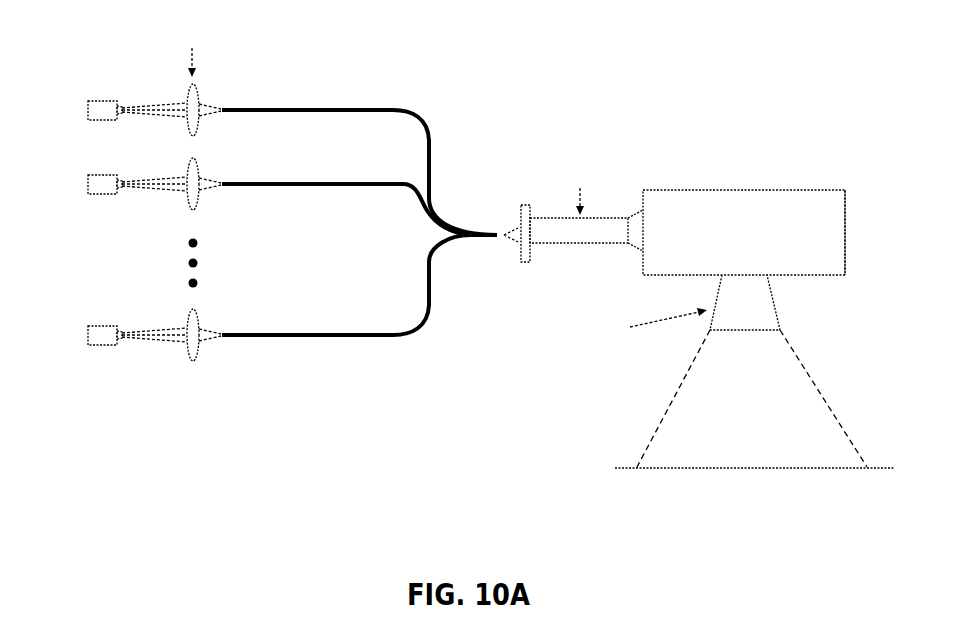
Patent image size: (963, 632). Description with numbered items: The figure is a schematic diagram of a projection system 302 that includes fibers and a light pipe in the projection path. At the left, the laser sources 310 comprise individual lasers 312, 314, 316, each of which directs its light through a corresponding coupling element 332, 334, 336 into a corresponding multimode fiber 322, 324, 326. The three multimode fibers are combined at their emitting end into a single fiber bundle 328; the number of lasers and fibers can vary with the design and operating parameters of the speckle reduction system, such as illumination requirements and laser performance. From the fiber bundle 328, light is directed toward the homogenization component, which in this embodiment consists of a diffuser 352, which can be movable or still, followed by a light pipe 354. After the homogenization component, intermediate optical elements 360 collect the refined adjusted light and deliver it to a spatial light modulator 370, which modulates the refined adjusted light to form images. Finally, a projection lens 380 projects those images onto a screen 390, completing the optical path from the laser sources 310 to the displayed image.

The projection system 302 is at (699, 78).
The laser sources 310 is at (97, 406).
The laser 312 is at (100, 115).
The laser 314 is at (100, 189).
The laser 316 is at (100, 340).
The multimode fiber 322 is at (284, 115).
The multimode fiber 324 is at (284, 190).
The multimode fiber 326 is at (284, 341).
The fiber bundle 328 is at (480, 228).
The coupling element 332 is at (191, 118).
The coupling element 334 is at (191, 192).
The coupling element 336 is at (191, 343).
The diffuser 352 is at (518, 258).
The light pipe 354 is at (553, 228).
The intermediate optical elements 360 is at (784, 194).
The spatial light modulator 370 is at (838, 246).
The projection lens 380 is at (773, 305).
The screen 390 is at (868, 468).